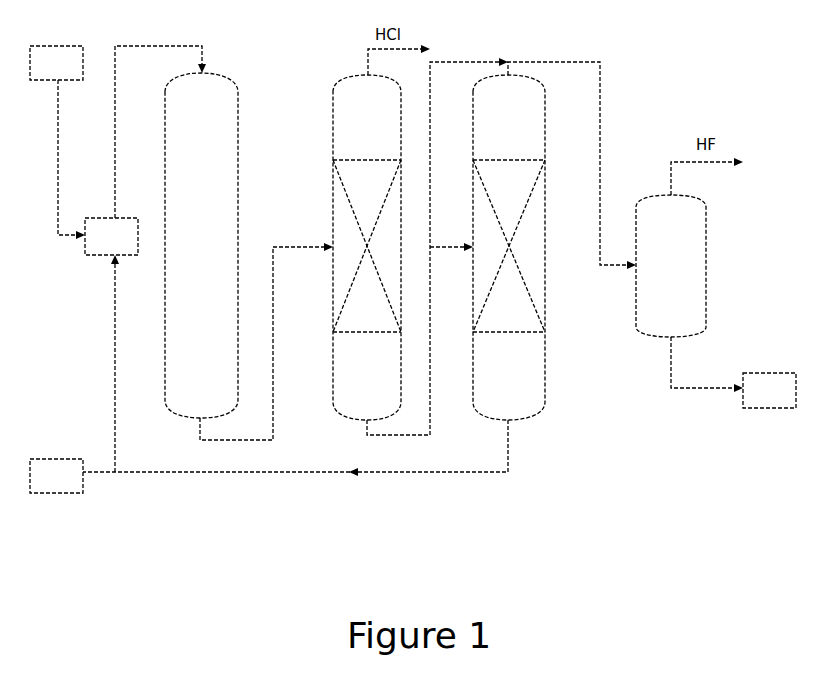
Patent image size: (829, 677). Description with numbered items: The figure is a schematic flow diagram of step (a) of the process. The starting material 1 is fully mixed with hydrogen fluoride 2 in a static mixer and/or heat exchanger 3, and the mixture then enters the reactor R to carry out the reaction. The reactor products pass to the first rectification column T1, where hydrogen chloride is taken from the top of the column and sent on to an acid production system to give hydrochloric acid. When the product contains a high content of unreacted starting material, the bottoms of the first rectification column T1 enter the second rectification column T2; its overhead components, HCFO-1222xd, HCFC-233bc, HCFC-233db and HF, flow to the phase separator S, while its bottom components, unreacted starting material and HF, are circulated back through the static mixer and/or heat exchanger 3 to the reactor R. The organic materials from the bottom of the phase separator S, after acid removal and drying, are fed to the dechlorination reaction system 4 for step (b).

The starting material 1 is at (56, 63).
The hydrogen fluoride 2 is at (56, 476).
The static mixer and/or heat exchanger 3 is at (111, 236).
The dechlorination reaction system 4 is at (769, 390).
The reactor R is at (201, 245).
The first rectification column T1 is at (367, 247).
The second rectification column T2 is at (509, 247).
The phase separator S is at (671, 266).